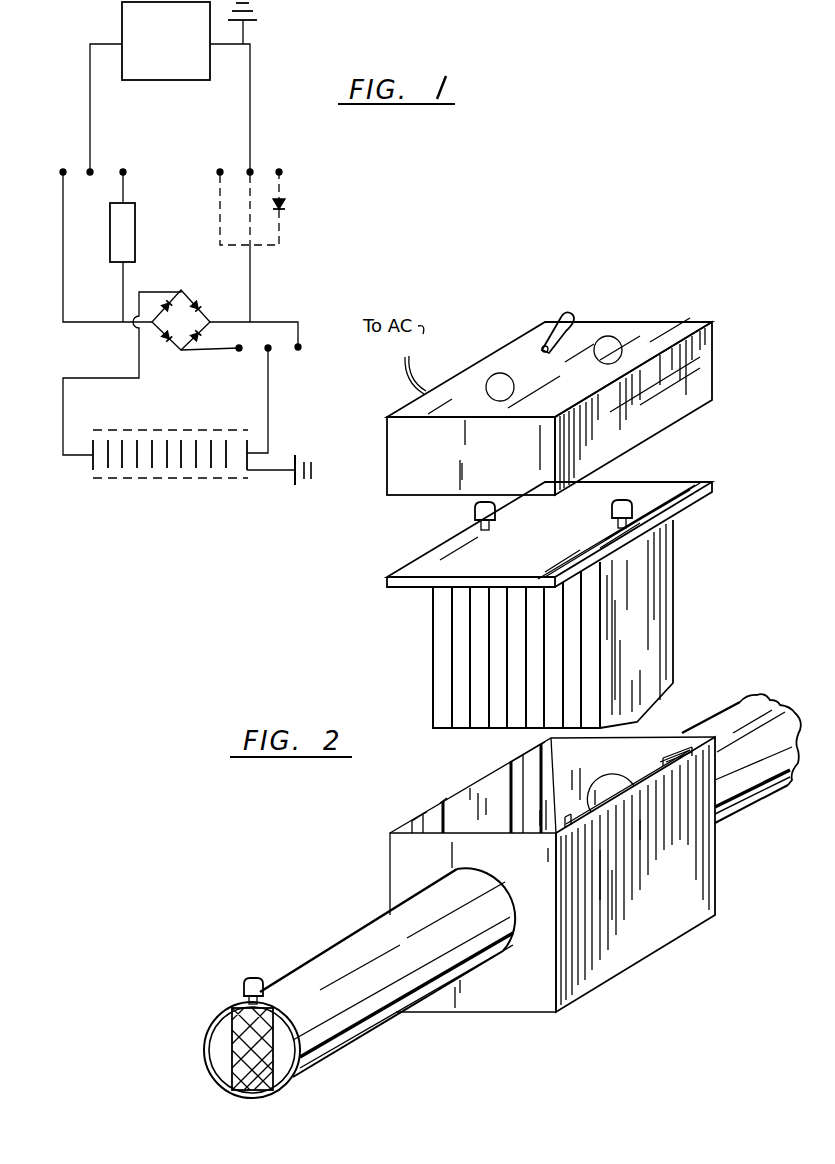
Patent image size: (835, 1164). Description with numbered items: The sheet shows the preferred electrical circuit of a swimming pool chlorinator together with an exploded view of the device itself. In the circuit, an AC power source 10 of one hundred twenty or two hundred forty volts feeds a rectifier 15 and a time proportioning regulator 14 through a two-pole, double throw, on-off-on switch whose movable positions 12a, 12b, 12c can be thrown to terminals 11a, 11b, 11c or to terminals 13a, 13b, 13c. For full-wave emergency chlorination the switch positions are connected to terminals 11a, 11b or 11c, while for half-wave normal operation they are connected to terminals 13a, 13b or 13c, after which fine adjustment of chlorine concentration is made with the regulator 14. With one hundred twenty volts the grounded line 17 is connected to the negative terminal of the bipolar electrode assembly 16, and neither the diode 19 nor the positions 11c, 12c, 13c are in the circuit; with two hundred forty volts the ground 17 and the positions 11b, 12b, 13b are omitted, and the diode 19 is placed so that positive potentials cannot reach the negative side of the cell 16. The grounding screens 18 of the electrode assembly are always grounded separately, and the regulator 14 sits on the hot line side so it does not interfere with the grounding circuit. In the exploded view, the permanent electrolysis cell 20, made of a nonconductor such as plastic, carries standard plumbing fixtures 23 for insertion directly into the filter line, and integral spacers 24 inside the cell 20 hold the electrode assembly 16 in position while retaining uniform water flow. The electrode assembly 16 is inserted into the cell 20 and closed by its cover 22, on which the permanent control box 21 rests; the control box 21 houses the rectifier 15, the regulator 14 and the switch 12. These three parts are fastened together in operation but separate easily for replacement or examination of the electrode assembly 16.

In FIG. 1, the power source 10 is at (152, 80).
In FIG. 1, the terminal 11a is at (60, 168).
In FIG. 1, the terminal 11b is at (239, 352).
In FIG. 1, the terminal 11c is at (220, 168).
In FIG. 2, the switch 12 is at (567, 312).
In FIG. 1, the switch position 12a is at (93, 170).
In FIG. 1, the switch position 12b is at (266, 352).
In FIG. 1, the switch position 12c is at (252, 168).
In FIG. 1, the terminal 13a is at (126, 172).
In FIG. 1, the terminal 13b is at (300, 351).
In FIG. 1, the terminal 13c is at (282, 172).
In FIG. 1, the time proportioning regulator 14 is at (128, 234).
In FIG. 2, the time proportioning regulator 14 is at (608, 350).
In FIG. 1, the rectifier 15 is at (181, 320).
In FIG. 2, the rectifier 15 is at (500, 387).
In FIG. 1, the bipolar electrode assembly 16 is at (146, 453).
In FIG. 2, the bipolar electrode assembly 16 is at (465, 657).
In FIG. 1, the grounded line 17 is at (252, 22).
In FIG. 1, the grounding screens 18 is at (155, 430).
In FIG. 2, the grounding screens 18 is at (231, 1030).
In FIG. 1, the diode 19 is at (286, 205).
In FIG. 2, the electrolysis cell 20 is at (408, 853).
In FIG. 2, the control box 21 is at (465, 378).
In FIG. 2, the cover 22 is at (460, 548).
In FIG. 2, the plumbing fixtures 23 is at (740, 715).
In FIG. 2, the spacers 24 is at (426, 807).